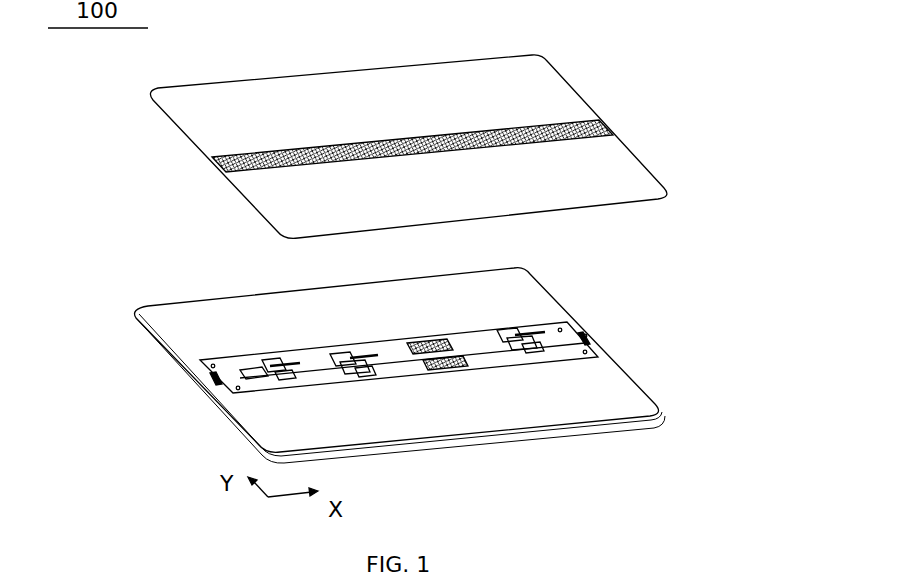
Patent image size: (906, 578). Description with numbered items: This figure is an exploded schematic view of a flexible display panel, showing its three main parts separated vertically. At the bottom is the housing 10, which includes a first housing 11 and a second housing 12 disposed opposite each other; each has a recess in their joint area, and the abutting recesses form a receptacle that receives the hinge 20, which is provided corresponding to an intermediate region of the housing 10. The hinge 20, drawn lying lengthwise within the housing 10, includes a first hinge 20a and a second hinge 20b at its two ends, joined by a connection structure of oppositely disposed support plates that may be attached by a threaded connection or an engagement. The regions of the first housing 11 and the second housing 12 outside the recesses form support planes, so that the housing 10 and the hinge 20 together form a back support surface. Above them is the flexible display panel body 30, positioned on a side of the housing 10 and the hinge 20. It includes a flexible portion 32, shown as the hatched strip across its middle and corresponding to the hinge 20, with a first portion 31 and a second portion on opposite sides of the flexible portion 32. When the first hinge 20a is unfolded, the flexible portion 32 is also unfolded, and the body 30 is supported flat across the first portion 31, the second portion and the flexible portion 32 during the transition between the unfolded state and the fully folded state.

The housing 10 is at (390, 366).
The first housing 11 is at (205, 310).
The second housing 12 is at (612, 402).
The hinge 20 is at (421, 338).
The first hinge 20a is at (595, 327).
The second hinge 20b is at (194, 354).
The flexible display panel body 30 is at (459, 137).
The first portion 31 is at (533, 72).
The flexible portion 32 is at (643, 183).